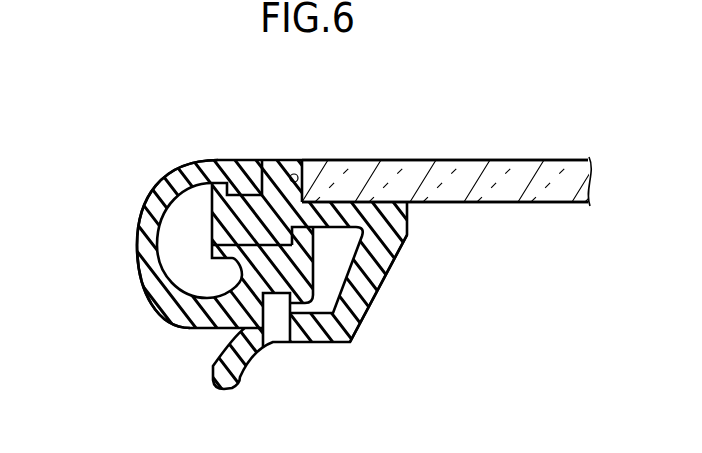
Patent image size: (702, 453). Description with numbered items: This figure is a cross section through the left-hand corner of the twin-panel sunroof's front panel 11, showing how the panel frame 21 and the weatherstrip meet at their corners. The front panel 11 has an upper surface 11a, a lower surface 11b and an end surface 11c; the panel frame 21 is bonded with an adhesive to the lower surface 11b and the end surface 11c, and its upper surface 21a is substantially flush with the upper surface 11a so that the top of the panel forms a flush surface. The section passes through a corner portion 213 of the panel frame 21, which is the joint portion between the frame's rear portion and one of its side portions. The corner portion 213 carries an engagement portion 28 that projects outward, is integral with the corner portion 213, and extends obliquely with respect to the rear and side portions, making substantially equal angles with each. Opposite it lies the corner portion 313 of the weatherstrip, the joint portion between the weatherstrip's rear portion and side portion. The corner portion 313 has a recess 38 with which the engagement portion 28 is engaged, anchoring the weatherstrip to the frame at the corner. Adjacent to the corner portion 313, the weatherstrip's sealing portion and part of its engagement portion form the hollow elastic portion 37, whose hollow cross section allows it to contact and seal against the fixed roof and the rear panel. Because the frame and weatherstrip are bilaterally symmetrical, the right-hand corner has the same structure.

The front panel 11 is at (423, 160).
The upper surface 11a is at (490, 160).
The lower surface 11b is at (351, 204).
The end surface 11c is at (298, 167).
The panel frame 21 is at (367, 312).
The upper surface 21a is at (285, 167).
The corner portion 213 is at (398, 253).
The engagement portion 28 is at (238, 195).
The recess 38 is at (228, 207).
The hollow elastic portion 37 is at (182, 243).
The corner portion 313 is at (160, 287).